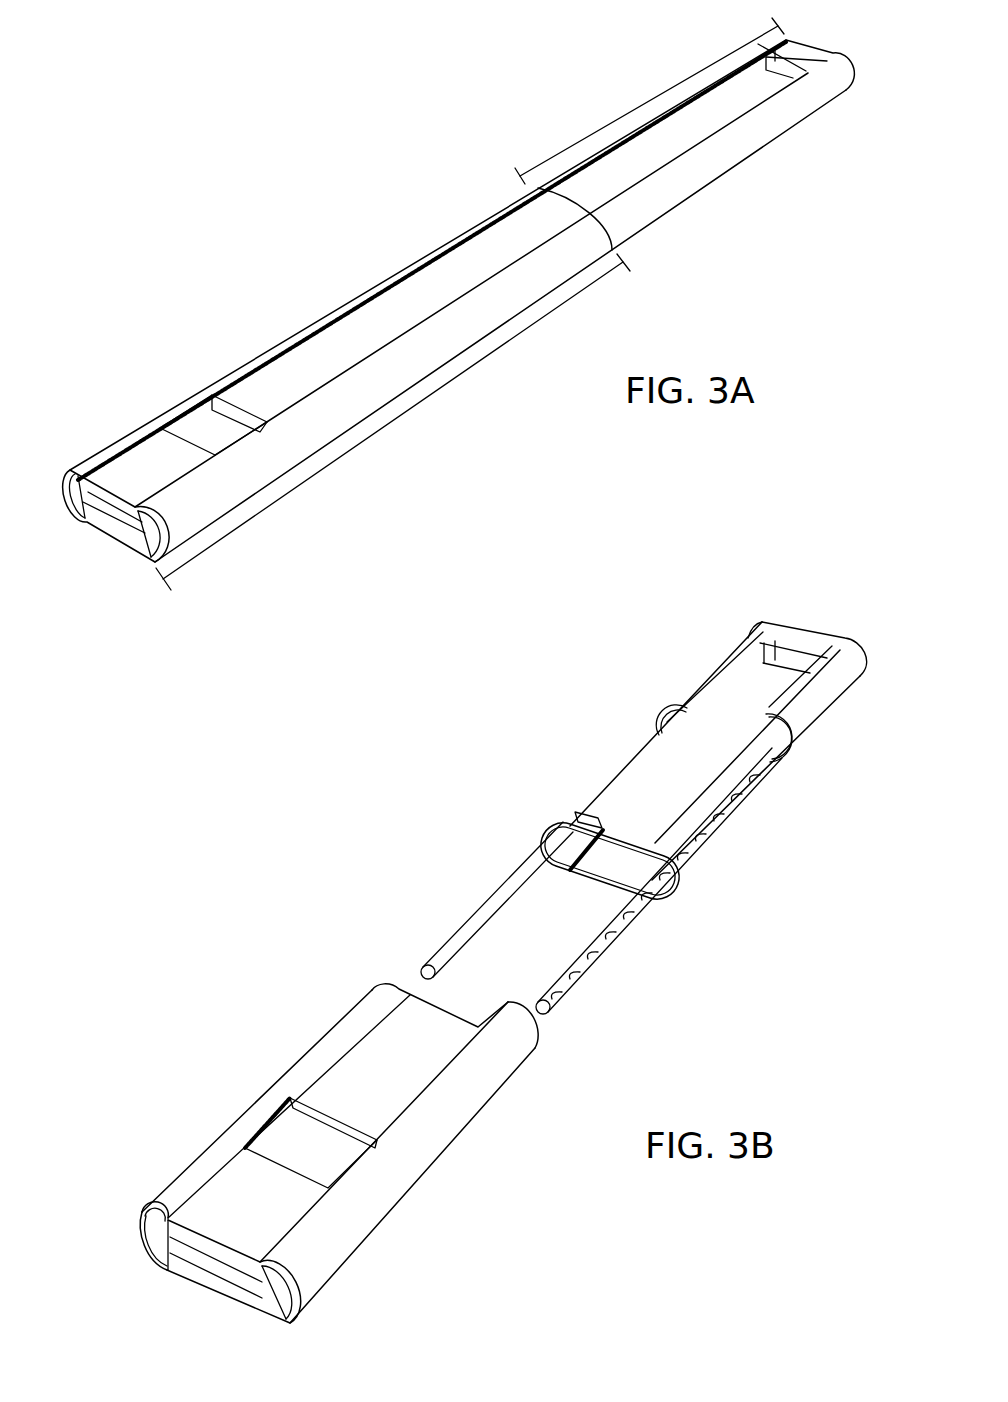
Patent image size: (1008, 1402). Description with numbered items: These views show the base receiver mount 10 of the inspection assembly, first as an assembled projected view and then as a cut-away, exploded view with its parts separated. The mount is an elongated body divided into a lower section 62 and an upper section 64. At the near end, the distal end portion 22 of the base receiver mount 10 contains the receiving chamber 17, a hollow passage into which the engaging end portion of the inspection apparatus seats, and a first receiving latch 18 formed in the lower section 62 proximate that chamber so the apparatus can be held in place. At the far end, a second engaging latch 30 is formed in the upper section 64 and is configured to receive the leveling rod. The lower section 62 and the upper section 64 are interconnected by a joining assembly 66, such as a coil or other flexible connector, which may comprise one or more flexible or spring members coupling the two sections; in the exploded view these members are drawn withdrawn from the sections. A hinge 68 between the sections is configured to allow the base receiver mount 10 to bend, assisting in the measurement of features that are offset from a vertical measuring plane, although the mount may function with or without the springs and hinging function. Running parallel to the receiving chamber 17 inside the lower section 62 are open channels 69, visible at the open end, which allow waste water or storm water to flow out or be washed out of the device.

In FIG. 3A, the base receiver mount 10 is at (472, 257).
In FIG. 3B, the base receiver mount 10 is at (370, 1062).
In FIG. 3A, the receiving chamber 17 is at (117, 530).
In FIG. 3B, the receiving chamber 17 is at (218, 1271).
In FIG. 3A, the first receiving latch 18 is at (200, 425).
In FIG. 3B, the first receiving latch 18 is at (292, 1143).
In FIG. 3A, the distal end portion 22 is at (207, 569).
In FIG. 3B, the distal end portion 22 is at (380, 1276).
In FIG. 3A, the second engaging latch 30 is at (845, 77).
In FIG. 3B, the second engaging latch 30 is at (780, 663).
In FIG. 3A, the lower section 62 is at (400, 416).
In FIG. 3A, the upper section 64 is at (644, 104).
In FIG. 3B, the joining assembly 66 is at (527, 879).
In FIG. 3A, the hinge 68 is at (557, 182).
In FIG. 3B, the hinge 68 is at (601, 797).
In FIG. 3A, the open channels 69 is at (70, 497).
In FIG. 3B, the open channels 69 is at (150, 1237).